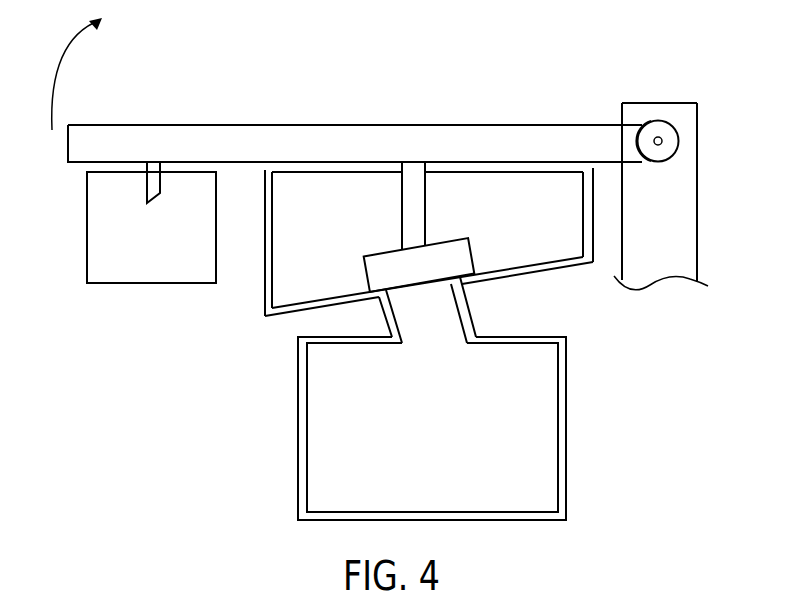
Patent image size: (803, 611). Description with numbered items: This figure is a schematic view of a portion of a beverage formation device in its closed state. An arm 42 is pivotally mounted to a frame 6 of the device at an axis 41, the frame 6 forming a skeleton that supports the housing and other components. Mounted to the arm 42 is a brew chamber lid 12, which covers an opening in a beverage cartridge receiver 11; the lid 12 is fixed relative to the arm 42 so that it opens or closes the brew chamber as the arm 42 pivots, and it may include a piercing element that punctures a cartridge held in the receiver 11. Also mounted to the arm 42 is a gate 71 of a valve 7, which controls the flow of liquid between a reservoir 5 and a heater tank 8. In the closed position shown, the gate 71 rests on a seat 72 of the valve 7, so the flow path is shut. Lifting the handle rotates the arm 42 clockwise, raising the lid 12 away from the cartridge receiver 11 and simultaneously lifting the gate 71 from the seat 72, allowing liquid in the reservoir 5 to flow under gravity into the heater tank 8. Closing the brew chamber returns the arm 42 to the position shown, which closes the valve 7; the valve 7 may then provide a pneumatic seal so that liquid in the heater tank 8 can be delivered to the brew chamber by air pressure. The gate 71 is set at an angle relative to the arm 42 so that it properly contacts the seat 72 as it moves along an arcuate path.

The arm 42 is at (242, 138).
The brew chamber lid 12 is at (83, 152).
The beverage cartridge receiver 11 is at (105, 258).
The reservoir 5 is at (282, 285).
The valve 7 is at (429, 240).
The gate 71 is at (441, 252).
The seat 72 is at (352, 293).
The heater tank 8 is at (560, 445).
The frame 6 is at (682, 227).
The axis 41 is at (662, 139).